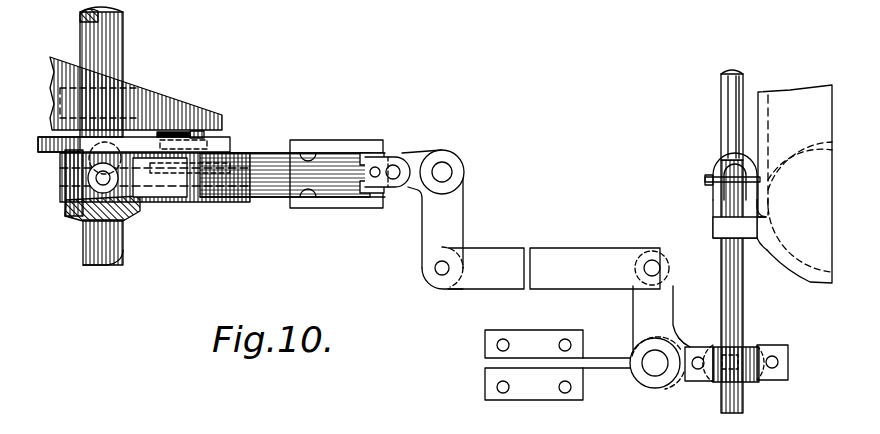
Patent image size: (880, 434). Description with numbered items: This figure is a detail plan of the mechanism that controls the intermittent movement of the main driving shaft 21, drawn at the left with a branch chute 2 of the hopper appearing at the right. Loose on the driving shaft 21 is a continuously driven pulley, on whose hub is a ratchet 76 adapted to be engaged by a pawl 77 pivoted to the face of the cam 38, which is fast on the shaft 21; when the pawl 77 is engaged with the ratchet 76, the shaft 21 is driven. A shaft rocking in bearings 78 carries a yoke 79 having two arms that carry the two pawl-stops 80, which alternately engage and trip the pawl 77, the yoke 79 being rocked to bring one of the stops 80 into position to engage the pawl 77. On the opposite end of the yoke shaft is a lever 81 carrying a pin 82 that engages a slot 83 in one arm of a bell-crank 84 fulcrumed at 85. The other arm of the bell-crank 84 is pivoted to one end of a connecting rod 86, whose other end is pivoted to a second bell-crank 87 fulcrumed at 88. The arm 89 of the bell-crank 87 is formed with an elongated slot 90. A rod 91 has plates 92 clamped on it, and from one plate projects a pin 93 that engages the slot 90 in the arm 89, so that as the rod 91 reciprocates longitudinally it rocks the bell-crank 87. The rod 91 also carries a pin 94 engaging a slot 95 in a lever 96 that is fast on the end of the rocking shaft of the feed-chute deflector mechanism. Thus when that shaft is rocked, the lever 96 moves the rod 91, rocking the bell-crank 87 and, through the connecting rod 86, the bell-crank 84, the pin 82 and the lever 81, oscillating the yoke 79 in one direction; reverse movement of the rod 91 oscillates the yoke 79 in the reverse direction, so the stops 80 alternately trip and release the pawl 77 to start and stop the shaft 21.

The branch chute 2 is at (800, 240).
The driving shaft 21 is at (113, 59).
The cam 38 is at (214, 113).
The ratchet 76 is at (42, 153).
The pawl 77 is at (140, 132).
The bearings 78 is at (337, 132).
The yoke 79 is at (233, 203).
The pawl-stops 80 is at (95, 168).
The lever 81 is at (404, 137).
The pin 82 is at (373, 182).
The slot 83 is at (400, 156).
The bell-crank 84 is at (435, 223).
The fulcrum 85 is at (447, 168).
The connecting rod 86 is at (483, 258).
The bell-crank 87 is at (647, 305).
The fulcrum 88 is at (652, 368).
The arm 89 is at (713, 327).
The elongated slot 90 is at (715, 383).
The rod 91 is at (750, 296).
The plates 92 is at (782, 373).
The pin 93 is at (752, 346).
The pin 94 is at (708, 183).
The slot 95 is at (728, 160).
The lever 96 is at (730, 113).